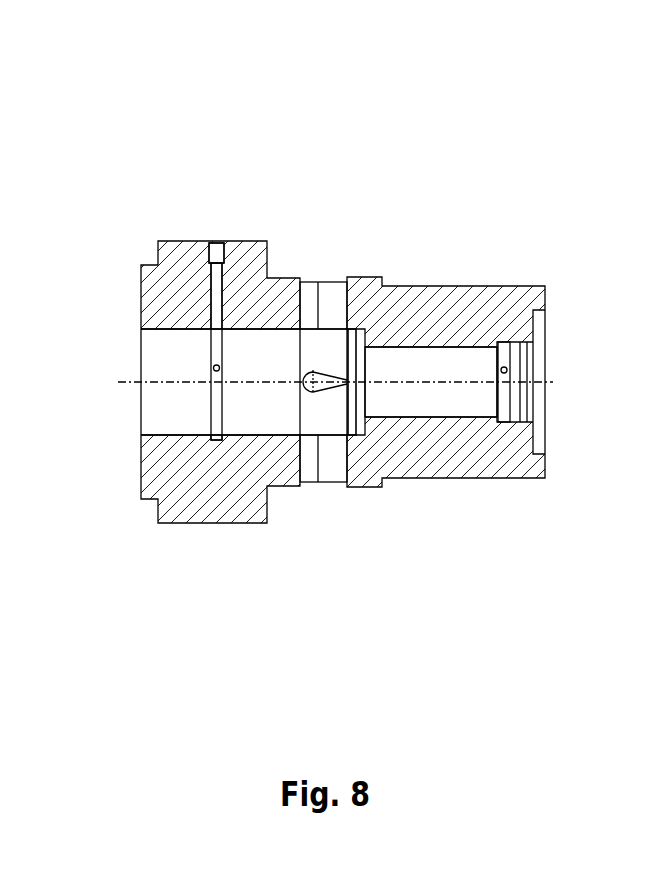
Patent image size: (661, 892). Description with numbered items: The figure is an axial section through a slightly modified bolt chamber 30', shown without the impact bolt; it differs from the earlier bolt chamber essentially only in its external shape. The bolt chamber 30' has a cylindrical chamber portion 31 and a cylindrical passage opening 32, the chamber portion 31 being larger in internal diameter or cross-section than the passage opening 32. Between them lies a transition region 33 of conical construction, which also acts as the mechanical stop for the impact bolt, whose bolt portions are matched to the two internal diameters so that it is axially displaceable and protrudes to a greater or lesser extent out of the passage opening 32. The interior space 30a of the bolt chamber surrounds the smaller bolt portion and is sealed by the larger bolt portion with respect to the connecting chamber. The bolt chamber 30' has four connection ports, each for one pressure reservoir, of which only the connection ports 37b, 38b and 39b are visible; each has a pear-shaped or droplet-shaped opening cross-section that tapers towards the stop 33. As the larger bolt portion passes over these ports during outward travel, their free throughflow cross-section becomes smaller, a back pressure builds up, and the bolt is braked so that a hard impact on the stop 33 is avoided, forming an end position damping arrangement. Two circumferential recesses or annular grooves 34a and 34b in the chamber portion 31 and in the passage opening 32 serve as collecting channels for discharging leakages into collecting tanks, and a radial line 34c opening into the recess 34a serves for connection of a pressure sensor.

The bolt chamber 30' is at (335, 254).
The interior space 30a is at (328, 418).
The cylindrical chamber portion 31 is at (167, 436).
The cylindrical passage opening 32 is at (440, 418).
The transition region 33 is at (363, 342).
The circumferential recess 34a is at (215, 441).
The circumferential recess 34b is at (503, 422).
The radial line 34c is at (214, 243).
The connection port 37b is at (332, 287).
The connection port 38b is at (327, 465).
The connection port 39b is at (302, 387).